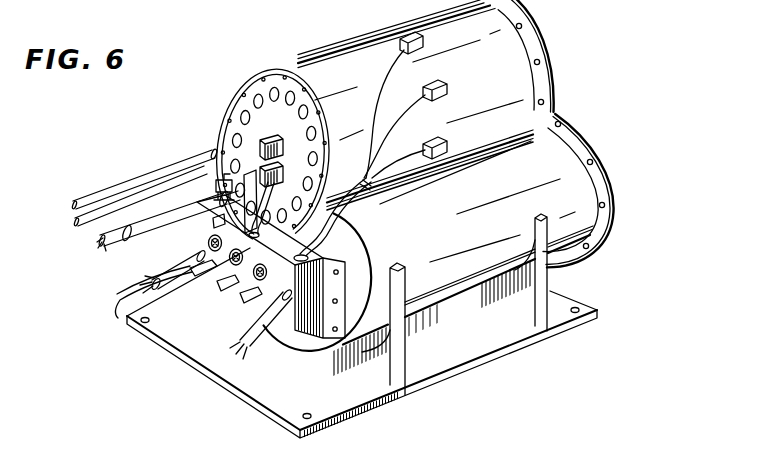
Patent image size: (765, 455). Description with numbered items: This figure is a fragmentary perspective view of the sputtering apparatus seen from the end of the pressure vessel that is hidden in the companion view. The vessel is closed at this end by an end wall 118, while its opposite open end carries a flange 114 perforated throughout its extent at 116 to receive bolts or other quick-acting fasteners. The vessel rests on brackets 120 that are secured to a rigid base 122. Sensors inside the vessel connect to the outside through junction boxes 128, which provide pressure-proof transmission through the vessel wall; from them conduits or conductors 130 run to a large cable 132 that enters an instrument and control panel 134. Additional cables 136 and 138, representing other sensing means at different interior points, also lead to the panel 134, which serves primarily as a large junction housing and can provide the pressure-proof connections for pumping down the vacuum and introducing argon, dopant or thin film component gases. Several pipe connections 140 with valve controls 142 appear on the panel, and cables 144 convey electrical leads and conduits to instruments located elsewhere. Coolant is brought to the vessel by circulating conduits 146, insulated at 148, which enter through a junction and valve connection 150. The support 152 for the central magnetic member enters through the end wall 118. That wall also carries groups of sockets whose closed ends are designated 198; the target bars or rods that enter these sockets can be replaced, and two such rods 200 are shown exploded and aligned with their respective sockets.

The flange 114 is at (556, 80).
The perforations 116 is at (572, 122).
The end wall 118 is at (244, 82).
The brackets 120 is at (532, 315).
The rigid base 122 is at (333, 397).
The junction boxes 128 is at (424, 42).
The conduits or conductors 130 is at (368, 50).
The large cable 132 is at (380, 222).
The instrument and control panel 134 is at (283, 322).
The additional cable 136 is at (347, 238).
The additional cable 138 is at (178, 255).
The pipe connections 140 is at (218, 286).
The valve controls 142 is at (192, 278).
The cables 144 is at (205, 335).
The circulating conduits 146 is at (101, 241).
The insulation 148 is at (163, 216).
The junction and valve connection 150 is at (176, 244).
The support for central magnetic member 152 is at (234, 99).
The sockets 198 is at (292, 78).
The rods 200 is at (108, 204).